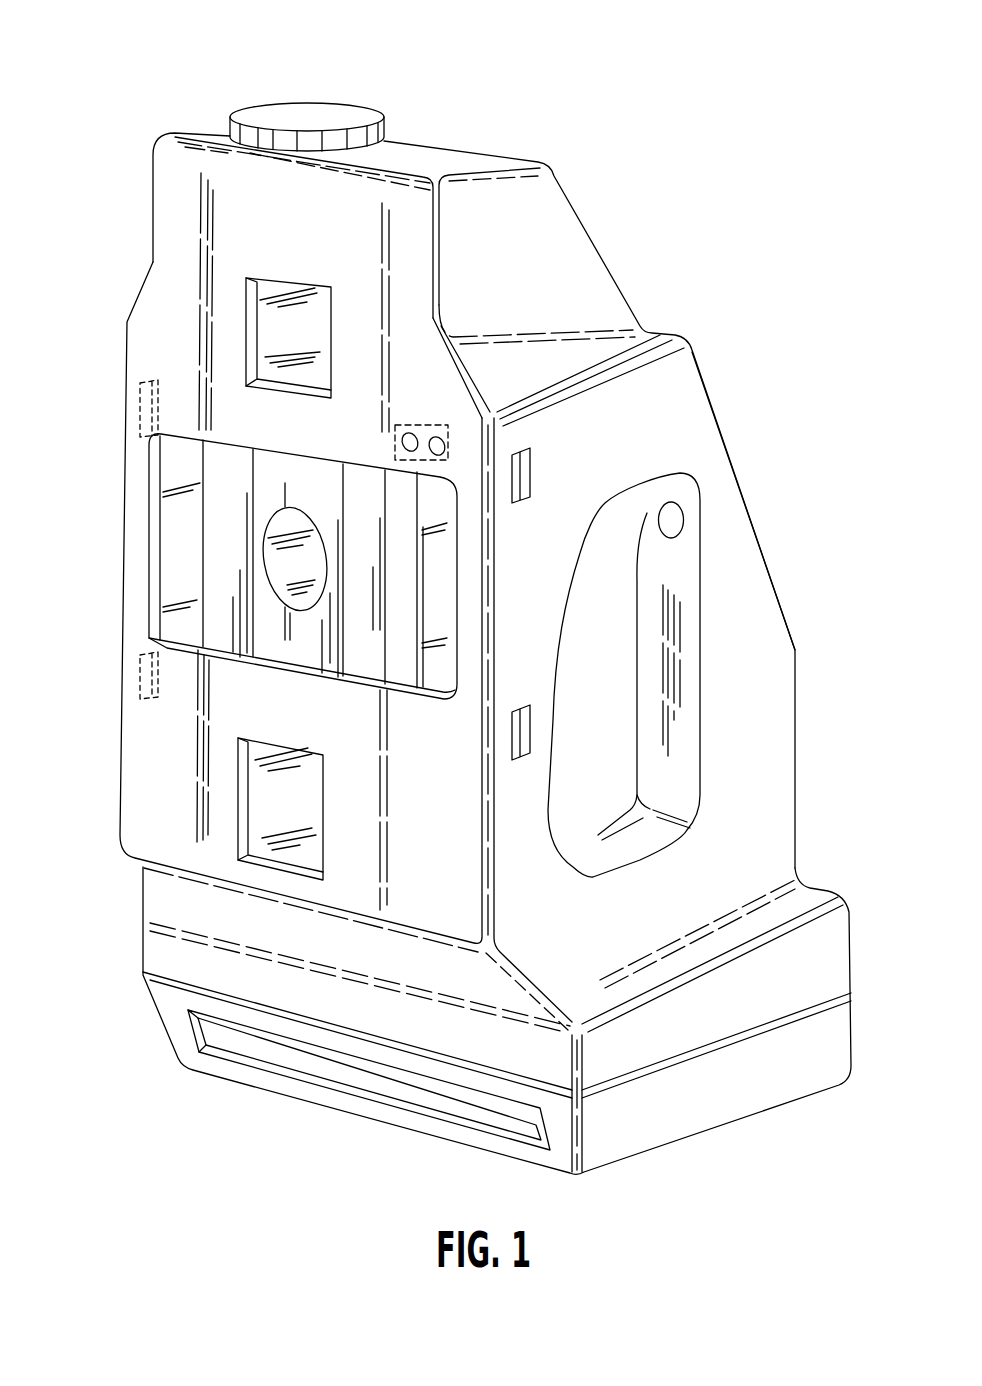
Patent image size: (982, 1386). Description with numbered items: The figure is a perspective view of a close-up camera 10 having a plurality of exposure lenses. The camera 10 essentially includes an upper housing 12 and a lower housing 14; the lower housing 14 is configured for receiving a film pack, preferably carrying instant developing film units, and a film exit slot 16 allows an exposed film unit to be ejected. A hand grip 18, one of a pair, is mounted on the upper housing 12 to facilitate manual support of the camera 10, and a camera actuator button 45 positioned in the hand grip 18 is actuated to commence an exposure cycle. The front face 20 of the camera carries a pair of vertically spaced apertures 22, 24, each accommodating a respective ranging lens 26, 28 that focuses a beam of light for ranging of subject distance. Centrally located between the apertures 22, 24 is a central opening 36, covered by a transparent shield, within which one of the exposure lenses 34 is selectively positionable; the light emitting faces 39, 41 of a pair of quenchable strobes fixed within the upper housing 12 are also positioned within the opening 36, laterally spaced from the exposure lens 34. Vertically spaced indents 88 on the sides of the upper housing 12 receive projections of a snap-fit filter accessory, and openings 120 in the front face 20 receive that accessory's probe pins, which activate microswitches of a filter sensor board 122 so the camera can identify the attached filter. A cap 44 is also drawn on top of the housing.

The close-up camera 10 is at (680, 278).
The upper housing 12 is at (742, 492).
The lower housing 14 is at (713, 1128).
The film exit slot 16 is at (343, 1067).
The hand grip 18 is at (705, 691).
The front face 20 is at (187, 174).
The aperture 22 is at (250, 342).
The aperture 24 is at (242, 770).
The ranging lens 26 is at (277, 325).
The ranging lens 28 is at (283, 803).
The exposure lens 34 is at (270, 557).
The central opening 36 is at (240, 448).
The light emitting face 39 is at (440, 598).
The light emitting face 41 is at (177, 555).
The cap 44 is at (305, 110).
The camera actuator button 45 is at (672, 523).
The indents 88 is at (140, 403).
The openings 120 is at (432, 430).
The filter sensor board 122 is at (455, 438).